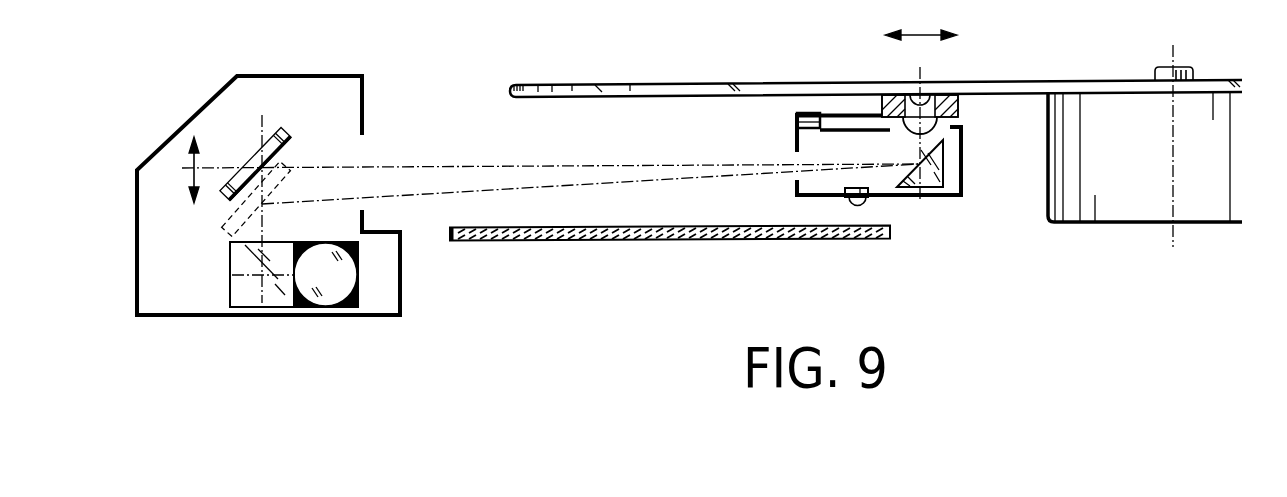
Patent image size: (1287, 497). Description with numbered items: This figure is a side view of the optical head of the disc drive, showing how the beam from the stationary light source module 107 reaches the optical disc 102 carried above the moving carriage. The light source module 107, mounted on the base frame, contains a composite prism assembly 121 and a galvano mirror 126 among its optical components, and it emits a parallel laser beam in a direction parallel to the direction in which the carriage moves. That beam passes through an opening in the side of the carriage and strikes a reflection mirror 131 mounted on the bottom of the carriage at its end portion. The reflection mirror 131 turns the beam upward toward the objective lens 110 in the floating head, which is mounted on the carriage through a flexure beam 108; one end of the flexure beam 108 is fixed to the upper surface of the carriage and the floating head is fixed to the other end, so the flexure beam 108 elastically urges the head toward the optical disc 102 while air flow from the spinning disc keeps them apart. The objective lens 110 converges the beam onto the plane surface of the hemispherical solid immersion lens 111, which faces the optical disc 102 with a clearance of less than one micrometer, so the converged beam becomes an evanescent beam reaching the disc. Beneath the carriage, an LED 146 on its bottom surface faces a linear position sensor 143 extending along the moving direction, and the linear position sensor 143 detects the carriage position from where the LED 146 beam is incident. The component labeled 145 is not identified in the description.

The optical disc 102 is at (690, 48).
The light source module 107 is at (276, 75).
The flexure beam 108 is at (843, 114).
The objective lens 110 is at (928, 124).
The solid immersion lens 111 is at (958, 106).
The composite prism assembly 121 is at (224, 283).
The galvano mirror 126 is at (288, 130).
The reflection mirror 131 is at (933, 180).
The linear position sensor 143 is at (652, 241).
The motor 145 is at (1135, 193).
The LED 146 is at (853, 204).